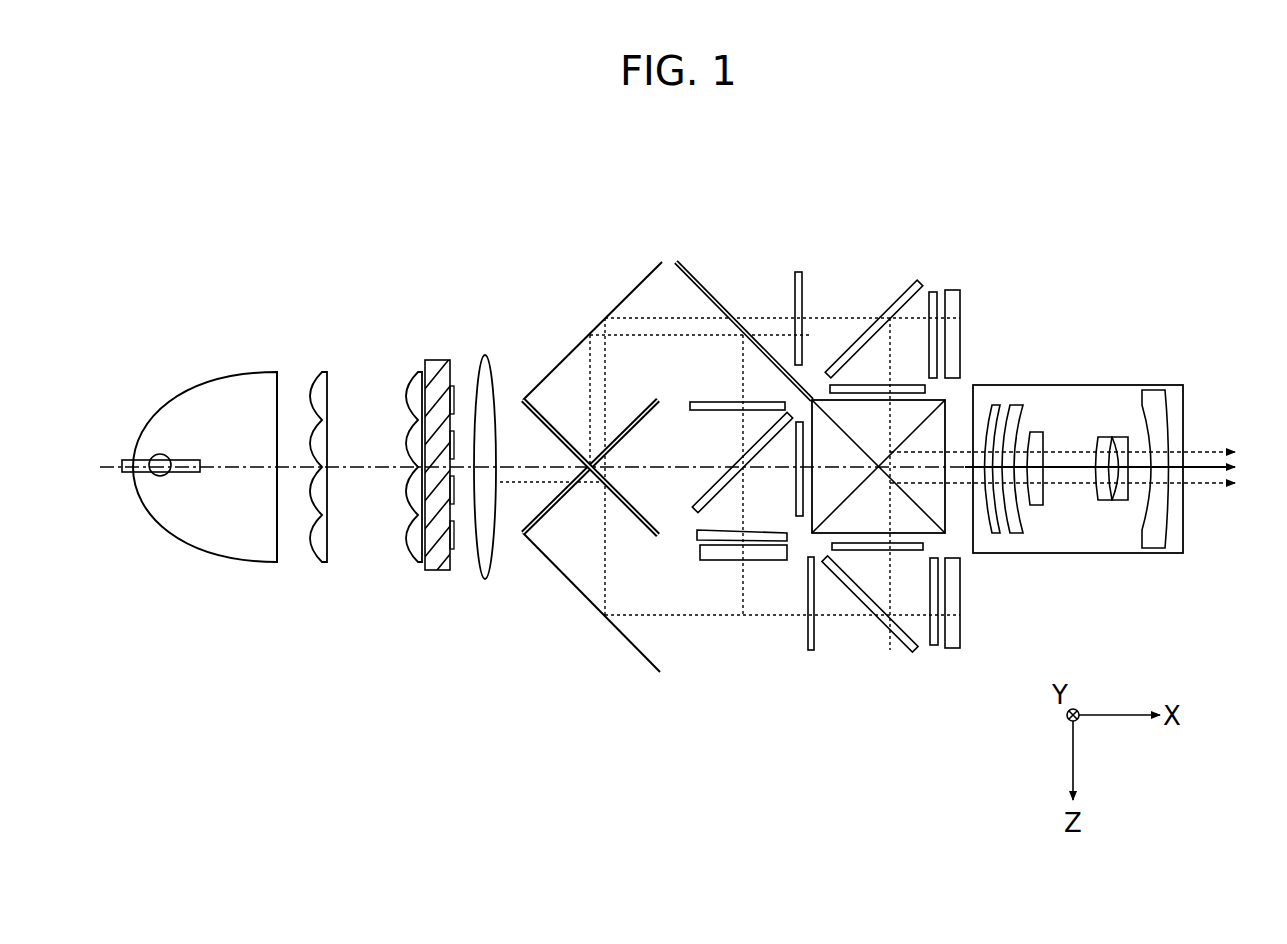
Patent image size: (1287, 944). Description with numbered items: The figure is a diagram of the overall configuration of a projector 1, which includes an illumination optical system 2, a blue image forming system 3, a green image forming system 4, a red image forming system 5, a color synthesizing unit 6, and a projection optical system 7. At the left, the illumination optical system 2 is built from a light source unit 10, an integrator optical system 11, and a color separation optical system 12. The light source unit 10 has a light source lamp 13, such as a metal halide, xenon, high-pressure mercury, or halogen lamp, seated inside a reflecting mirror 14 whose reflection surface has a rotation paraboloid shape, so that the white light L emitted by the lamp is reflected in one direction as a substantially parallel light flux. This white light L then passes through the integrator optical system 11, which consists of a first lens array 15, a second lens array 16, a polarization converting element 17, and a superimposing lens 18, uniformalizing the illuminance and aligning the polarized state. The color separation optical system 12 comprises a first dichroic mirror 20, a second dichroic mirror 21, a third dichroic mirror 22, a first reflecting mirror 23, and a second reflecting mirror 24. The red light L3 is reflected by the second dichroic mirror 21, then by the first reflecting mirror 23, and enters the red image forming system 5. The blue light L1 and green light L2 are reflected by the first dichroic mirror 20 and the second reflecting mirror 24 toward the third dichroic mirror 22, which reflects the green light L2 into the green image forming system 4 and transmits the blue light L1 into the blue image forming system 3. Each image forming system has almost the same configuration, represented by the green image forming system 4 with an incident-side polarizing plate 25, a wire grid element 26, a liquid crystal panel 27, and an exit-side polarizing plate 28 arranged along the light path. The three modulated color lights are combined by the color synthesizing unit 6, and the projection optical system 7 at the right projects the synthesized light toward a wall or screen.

The projector 1 is at (1065, 180).
The illumination optical system 2 is at (318, 246).
The blue image forming system 3 is at (856, 223).
The green image forming system 4 is at (690, 462).
The red image forming system 5 is at (882, 680).
The color synthesizing unit 6 is at (933, 505).
The projection optical system 7 is at (1070, 542).
The light source unit 10 is at (198, 588).
The integrator optical system 11 is at (508, 632).
The color separation optical system 12 is at (660, 242).
The light source lamp 13 is at (160, 476).
The reflecting mirror 14 is at (178, 540).
The first lens array 15 is at (315, 566).
The second lens array 16 is at (410, 546).
The polarization converting element 17 is at (438, 571).
The superimposing lens 18 is at (486, 576).
The first dichroic mirror 20 is at (633, 425).
The second dichroic mirror 21 is at (628, 517).
The third dichroic mirror 22 is at (702, 287).
The first reflecting mirror 23 is at (618, 659).
The second reflecting mirror 24 is at (628, 292).
The incident-side polarizing plate 25 is at (706, 401).
The wire grid element 26 is at (728, 470).
The liquid crystal panel 27 is at (692, 528).
The exit-side polarizing plate 28 is at (796, 494).
The white light L is at (288, 456).
The blue light L1 is at (550, 446).
The green light L2 is at (512, 486).
The red light L3 is at (512, 486).